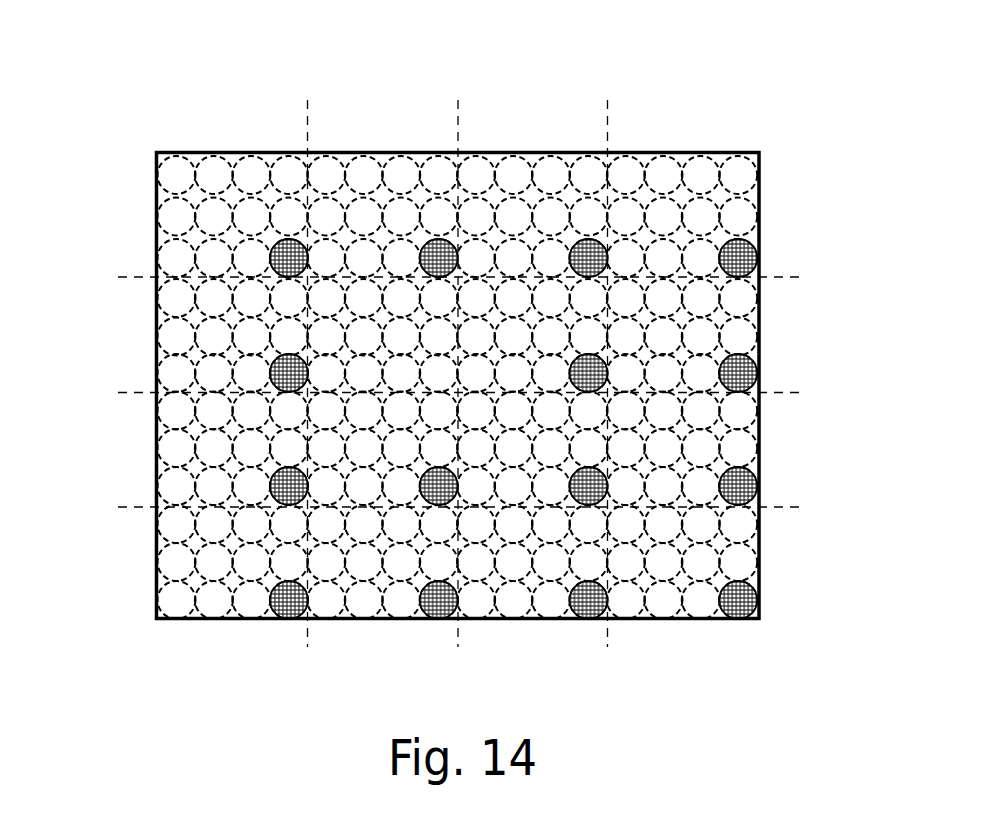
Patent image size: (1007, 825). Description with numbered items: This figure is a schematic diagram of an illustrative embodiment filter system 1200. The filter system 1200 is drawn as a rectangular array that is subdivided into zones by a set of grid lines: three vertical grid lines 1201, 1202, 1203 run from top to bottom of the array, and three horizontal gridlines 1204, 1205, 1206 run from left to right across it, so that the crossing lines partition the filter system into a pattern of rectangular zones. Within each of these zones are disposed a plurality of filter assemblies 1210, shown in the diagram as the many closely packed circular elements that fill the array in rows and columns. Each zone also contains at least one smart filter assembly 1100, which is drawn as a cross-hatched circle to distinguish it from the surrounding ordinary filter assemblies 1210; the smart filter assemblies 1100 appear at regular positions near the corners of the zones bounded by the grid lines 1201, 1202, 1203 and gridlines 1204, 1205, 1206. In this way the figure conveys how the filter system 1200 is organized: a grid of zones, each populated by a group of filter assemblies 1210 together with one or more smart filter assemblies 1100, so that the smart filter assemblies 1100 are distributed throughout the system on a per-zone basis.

The filter system 1200 is at (478, 76).
The vertical grid line 1201 is at (307, 130).
The vertical grid line 1202 is at (458, 130).
The vertical grid line 1203 is at (607, 120).
The horizontal gridline 1204 is at (122, 277).
The horizontal gridline 1205 is at (122, 392).
The horizontal gridline 1206 is at (122, 507).
The filter assemblies 1210 is at (627, 152).
The smart filter assembly 1100 is at (760, 257).